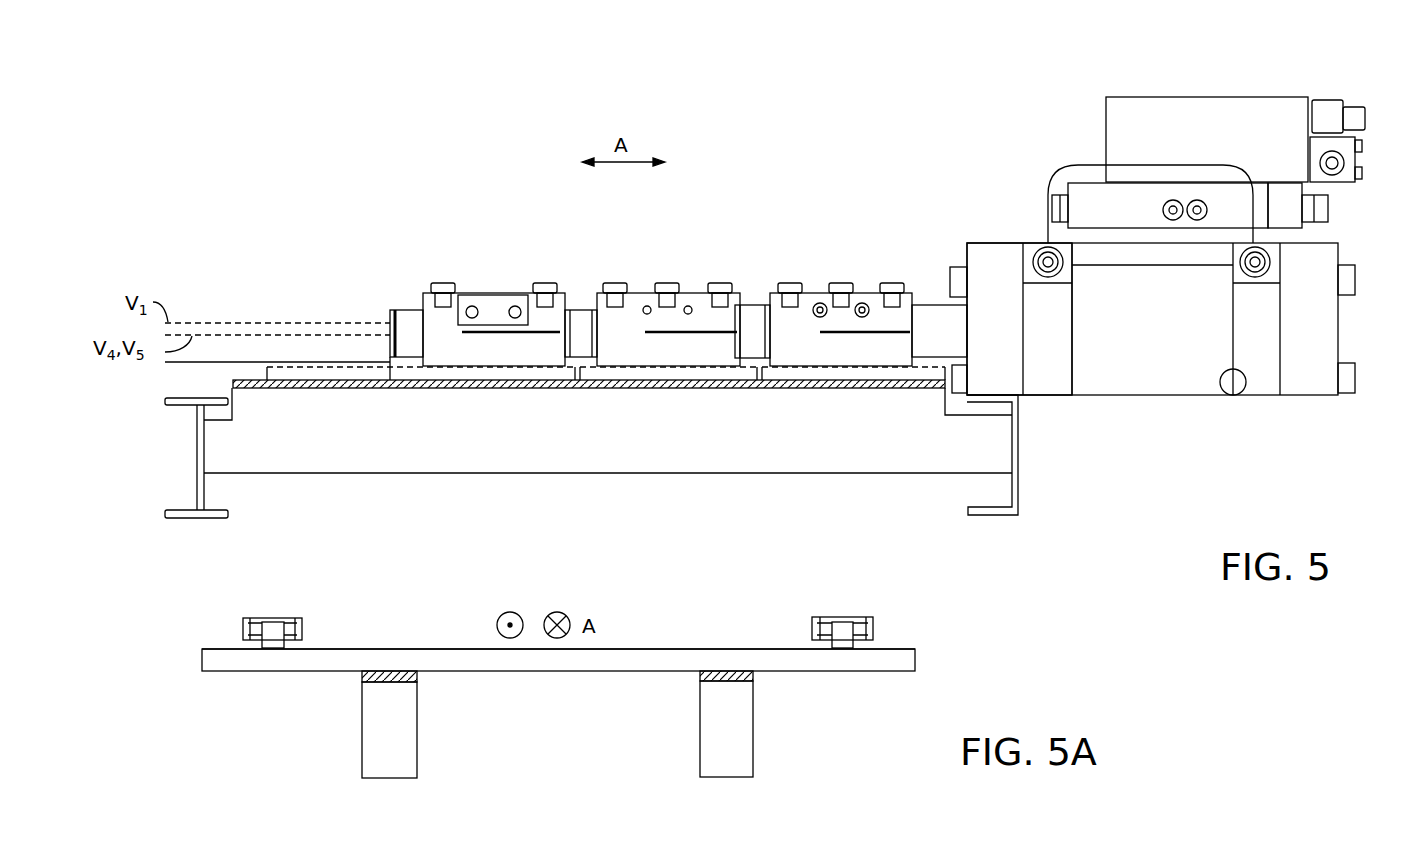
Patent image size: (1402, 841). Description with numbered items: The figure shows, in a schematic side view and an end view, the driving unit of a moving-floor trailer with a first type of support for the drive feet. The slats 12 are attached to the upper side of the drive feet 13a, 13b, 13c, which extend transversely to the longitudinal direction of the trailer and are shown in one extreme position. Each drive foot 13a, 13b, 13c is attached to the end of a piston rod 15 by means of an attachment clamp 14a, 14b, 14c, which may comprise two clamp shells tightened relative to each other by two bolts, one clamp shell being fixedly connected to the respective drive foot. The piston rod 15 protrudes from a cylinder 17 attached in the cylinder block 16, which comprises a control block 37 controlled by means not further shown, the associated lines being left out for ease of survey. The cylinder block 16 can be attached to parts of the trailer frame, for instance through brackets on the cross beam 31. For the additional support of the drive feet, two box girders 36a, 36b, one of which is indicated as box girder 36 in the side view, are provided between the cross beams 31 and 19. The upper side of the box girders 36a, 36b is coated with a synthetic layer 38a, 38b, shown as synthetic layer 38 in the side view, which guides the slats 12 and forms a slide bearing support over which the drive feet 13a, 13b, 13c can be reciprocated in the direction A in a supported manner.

In FIG. 5, the slats 12 is at (200, 361).
In FIG. 5A, the slats 12 is at (302, 626).
In FIG. 5, the drive foot 13a is at (453, 373).
In FIG. 5, the drive foot 13b is at (667, 370).
In FIG. 5A, the drive foot 13b is at (662, 657).
In FIG. 5, the drive foot 13c is at (847, 370).
In FIG. 5, the attachment clamp 14a is at (500, 297).
In FIG. 5, the attachment clamp 14b is at (700, 297).
In FIG. 5, the attachment clamp 14c is at (847, 297).
In FIG. 5, the piston rod 15 is at (937, 300).
In FIG. 5, the cylinder block 16 is at (1133, 345).
In FIG. 5, the cylinder 17 is at (998, 355).
In FIG. 5, the cross beam 19 is at (192, 482).
In FIG. 5, the cross beam 31 is at (1018, 478).
In FIG. 5, the box girder 36 is at (486, 445).
In FIG. 5A, the box girder 36a is at (403, 717).
In FIG. 5A, the box girder 36b is at (708, 708).
In FIG. 5, the control block 37 is at (1208, 120).
In FIG. 5, the synthetic layer 38 is at (358, 388).
In FIG. 5A, the synthetic layer 38a is at (362, 678).
In FIG. 5A, the synthetic layer 38b is at (753, 677).